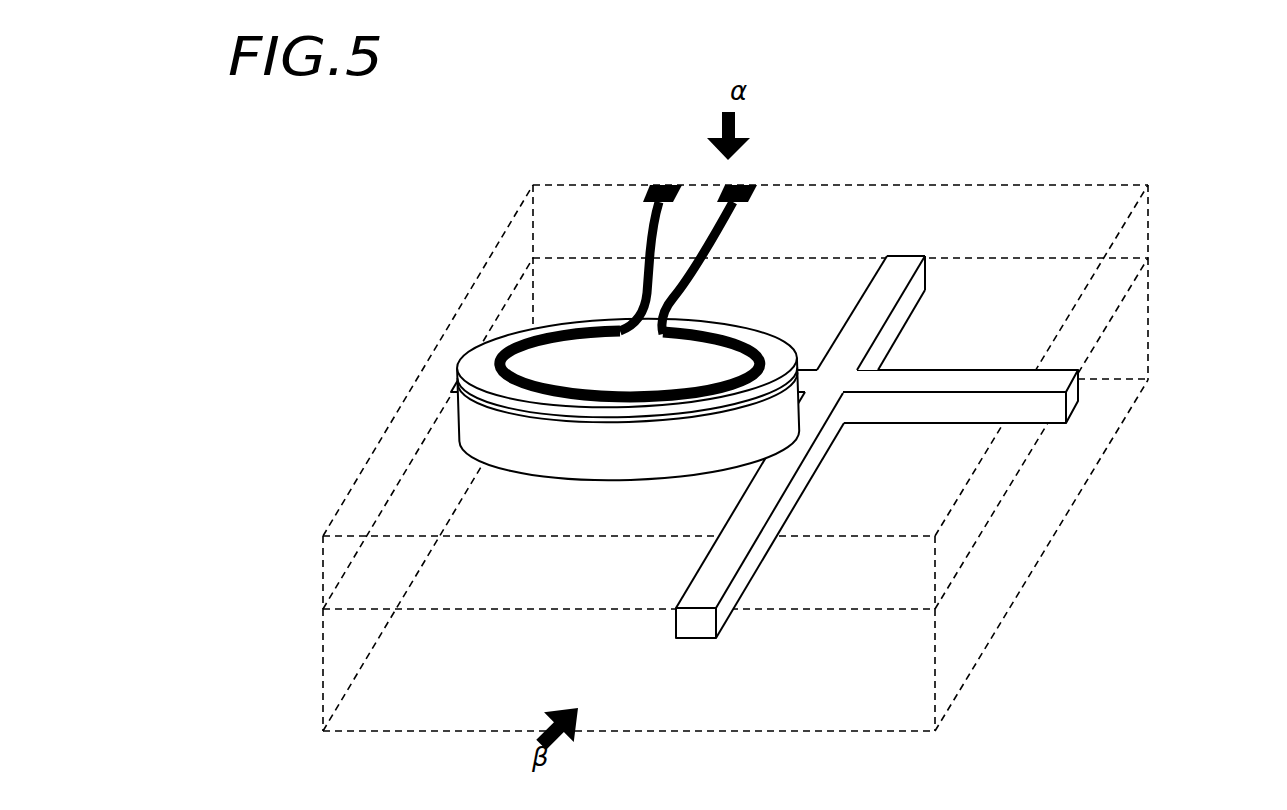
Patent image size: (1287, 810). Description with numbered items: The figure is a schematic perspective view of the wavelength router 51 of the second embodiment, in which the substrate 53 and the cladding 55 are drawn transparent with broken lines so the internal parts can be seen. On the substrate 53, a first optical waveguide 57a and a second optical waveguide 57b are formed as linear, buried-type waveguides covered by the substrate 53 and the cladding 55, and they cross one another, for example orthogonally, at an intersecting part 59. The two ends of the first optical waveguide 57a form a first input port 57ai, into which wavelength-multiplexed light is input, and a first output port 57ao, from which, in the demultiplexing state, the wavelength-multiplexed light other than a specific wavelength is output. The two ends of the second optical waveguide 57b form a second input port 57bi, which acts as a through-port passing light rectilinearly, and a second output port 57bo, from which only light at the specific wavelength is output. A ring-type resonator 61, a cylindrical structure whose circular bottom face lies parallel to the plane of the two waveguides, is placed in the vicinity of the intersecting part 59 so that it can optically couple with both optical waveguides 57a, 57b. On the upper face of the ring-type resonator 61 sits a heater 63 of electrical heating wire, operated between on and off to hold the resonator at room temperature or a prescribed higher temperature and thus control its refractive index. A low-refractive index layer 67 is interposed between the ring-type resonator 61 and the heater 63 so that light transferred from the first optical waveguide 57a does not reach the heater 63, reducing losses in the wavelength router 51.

The wavelength router 51 is at (1208, 177).
The substrate 53 is at (335, 670).
The cladding 55 is at (335, 563).
The first optical waveguide 57a is at (1012, 389).
The first input port 57ai is at (440, 385).
The first output port 57ao is at (1078, 397).
The second optical waveguide 57b is at (823, 449).
The second input port 57bi is at (916, 249).
The second output port 57bo is at (690, 630).
The intersecting part 59 is at (831, 370).
The ring-type resonator 61 is at (482, 432).
The heater 63 is at (533, 340).
The low-refractive index layer 67 is at (475, 367).